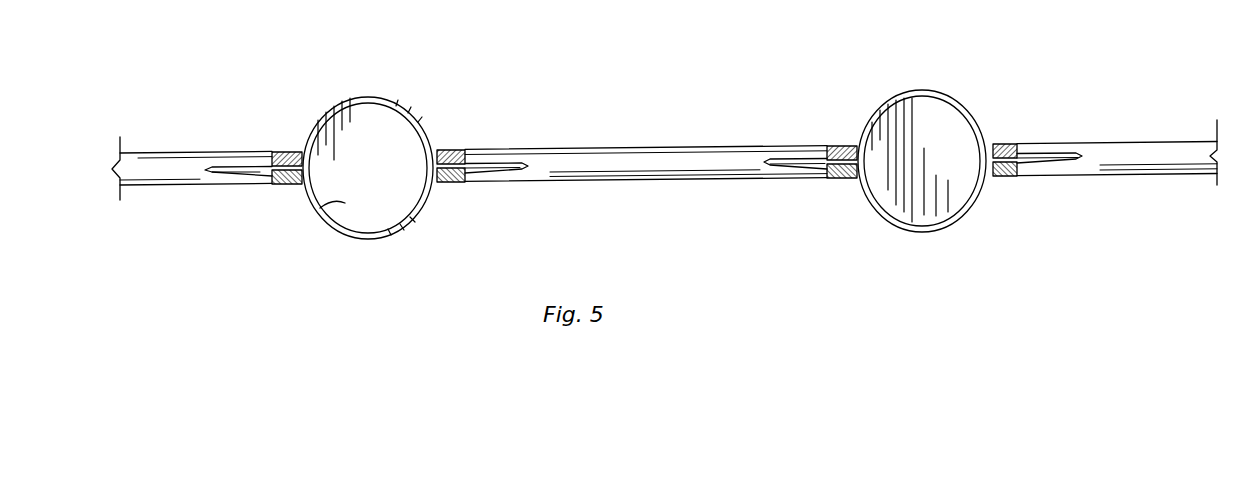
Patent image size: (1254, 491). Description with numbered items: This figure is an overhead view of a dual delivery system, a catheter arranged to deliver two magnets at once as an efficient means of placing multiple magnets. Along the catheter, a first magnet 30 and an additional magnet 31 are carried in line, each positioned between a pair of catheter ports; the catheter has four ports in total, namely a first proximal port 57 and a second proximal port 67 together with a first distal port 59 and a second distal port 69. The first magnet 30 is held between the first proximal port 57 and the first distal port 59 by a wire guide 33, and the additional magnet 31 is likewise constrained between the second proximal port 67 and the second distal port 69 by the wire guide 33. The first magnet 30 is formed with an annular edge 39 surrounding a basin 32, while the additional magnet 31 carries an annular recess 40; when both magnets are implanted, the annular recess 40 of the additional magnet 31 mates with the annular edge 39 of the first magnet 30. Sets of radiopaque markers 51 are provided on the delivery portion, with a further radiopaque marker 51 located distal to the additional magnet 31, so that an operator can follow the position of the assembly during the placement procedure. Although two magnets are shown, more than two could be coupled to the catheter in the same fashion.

The first magnet 30 is at (418, 92).
The additional magnet 31 is at (962, 92).
The basin 32 is at (322, 208).
The wire guide 33 is at (478, 148).
The annular edge 39 is at (354, 96).
The annular recess 40 is at (886, 218).
The radiopaque markers 51 is at (287, 151).
The first proximal port 57 is at (231, 185).
The first distal port 59 is at (526, 148).
The second proximal port 67 is at (780, 146).
The second distal port 69 is at (1068, 146).